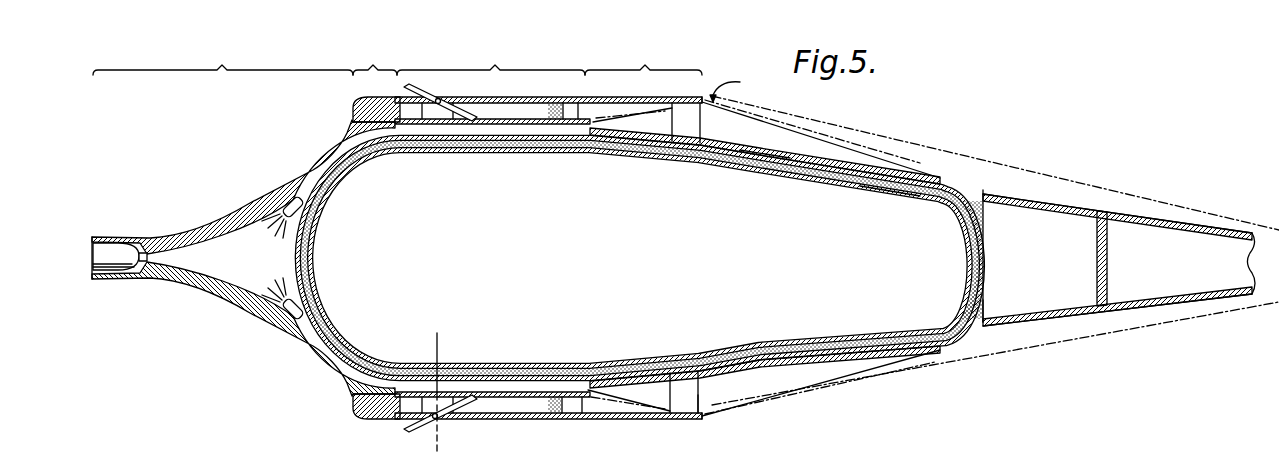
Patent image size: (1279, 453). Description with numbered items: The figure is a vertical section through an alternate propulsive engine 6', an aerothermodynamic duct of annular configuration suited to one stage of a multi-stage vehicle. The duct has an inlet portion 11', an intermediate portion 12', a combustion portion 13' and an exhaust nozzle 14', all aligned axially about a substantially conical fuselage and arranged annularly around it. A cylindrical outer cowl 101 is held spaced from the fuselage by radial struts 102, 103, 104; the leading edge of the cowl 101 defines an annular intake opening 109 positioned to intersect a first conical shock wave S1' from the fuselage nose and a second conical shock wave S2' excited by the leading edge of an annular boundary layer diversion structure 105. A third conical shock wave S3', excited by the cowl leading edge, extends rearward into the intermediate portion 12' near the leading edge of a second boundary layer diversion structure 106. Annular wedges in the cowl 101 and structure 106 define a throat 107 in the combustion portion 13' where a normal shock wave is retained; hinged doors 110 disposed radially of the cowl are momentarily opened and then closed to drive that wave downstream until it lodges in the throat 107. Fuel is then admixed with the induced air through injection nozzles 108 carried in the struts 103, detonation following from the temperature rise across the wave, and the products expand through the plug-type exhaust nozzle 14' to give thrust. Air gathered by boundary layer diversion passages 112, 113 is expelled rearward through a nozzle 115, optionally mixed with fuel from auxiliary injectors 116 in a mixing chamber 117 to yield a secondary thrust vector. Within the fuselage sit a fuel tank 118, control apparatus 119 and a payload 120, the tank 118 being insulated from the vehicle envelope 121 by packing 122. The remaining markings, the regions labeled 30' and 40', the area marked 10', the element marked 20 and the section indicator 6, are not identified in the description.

The exhaust nozzle 14' is at (223, 58).
The combustion portion 13' is at (375, 58).
The intermediate portion 12' is at (491, 58).
The inlet portion 11' is at (643, 58).
The mixing chamber 117 is at (250, 266).
The nozzle 115 is at (95, 255).
The auxiliary injectors 116 is at (281, 201).
The boundary layer diversion passage 113 is at (503, 134).
The boundary layer diversion passage 112 is at (757, 160).
The fuel tank 118 is at (893, 197).
The annular boundary layer diversion structure 105 is at (818, 163).
The radial strut 104 is at (422, 118).
The second boundary layer diversion structure 106 is at (513, 121).
The throat 107 is at (360, 112).
The hinged doors 110 is at (466, 99).
The injection nozzles 108 is at (557, 102).
The radial strut 103 is at (574, 116).
The cavity 40' is at (627, 263).
The third conical shock wave S3' is at (628, 260).
The cowl 101 is at (680, 100).
The radial strut 102 is at (701, 128).
The annular intake opening 109 is at (700, 394).
The engine 6' is at (726, 84).
The tapered section 30' is at (821, 259).
The second conical shock wave S2' is at (822, 257).
The first conical shock wave S1' is at (995, 250).
The packing 122 is at (960, 322).
The envelope 121 is at (960, 197).
The control apparatus 119 is at (989, 304).
The skin plate 20 is at (1040, 196).
The cargo or payload 120 is at (1220, 295).
The tail section 10' is at (1119, 249).
The section line 6 is at (404, 391).